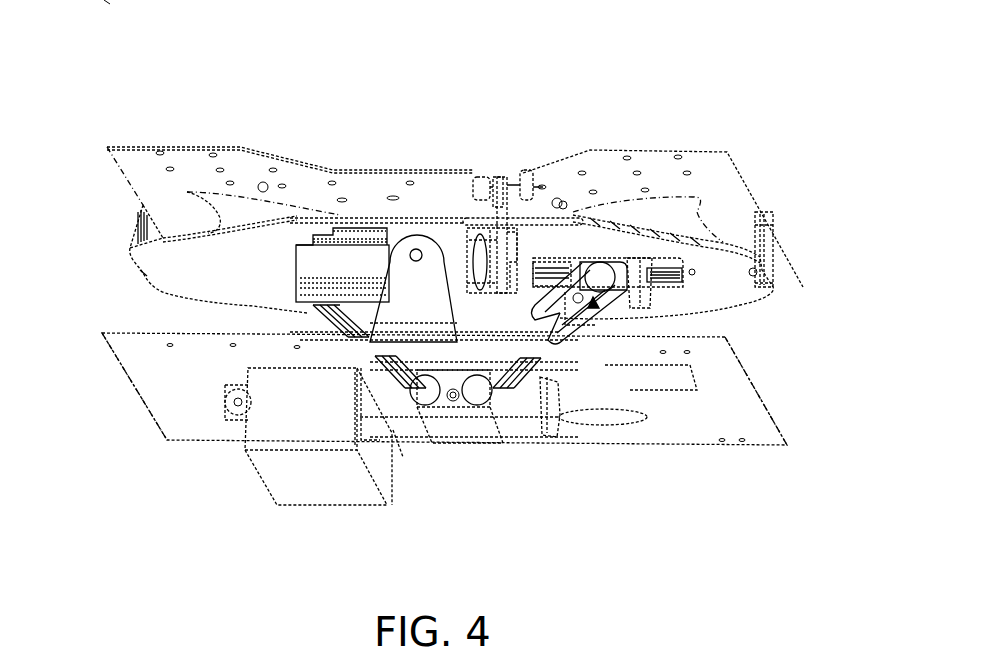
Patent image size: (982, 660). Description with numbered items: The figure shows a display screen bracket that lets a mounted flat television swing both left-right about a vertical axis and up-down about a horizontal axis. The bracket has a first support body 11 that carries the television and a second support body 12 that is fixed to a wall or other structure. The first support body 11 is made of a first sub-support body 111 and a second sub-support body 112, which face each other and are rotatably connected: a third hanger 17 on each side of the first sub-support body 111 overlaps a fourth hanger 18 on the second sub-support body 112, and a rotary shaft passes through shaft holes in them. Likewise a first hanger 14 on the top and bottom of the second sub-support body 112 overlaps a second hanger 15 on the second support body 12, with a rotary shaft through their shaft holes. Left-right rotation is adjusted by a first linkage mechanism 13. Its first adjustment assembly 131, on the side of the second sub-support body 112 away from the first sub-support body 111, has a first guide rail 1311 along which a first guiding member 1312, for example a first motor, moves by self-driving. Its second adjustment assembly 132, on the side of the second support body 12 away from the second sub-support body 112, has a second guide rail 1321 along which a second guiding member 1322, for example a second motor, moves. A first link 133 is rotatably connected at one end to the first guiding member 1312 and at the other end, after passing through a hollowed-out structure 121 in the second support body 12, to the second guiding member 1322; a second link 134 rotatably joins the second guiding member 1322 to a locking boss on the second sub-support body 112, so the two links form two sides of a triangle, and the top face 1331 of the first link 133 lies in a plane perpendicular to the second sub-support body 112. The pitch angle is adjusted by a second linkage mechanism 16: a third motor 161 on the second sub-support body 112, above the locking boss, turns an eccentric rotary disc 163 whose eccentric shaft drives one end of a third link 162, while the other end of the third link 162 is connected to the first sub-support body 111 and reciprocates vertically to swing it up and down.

The first support body 11 is at (407, 229).
The first sub-support body 111 is at (133, 178).
The second sub-support body 112 is at (156, 268).
The second support body 12 is at (450, 446).
The hollowed-out structure 121 is at (361, 358).
The first linkage mechanism 13 is at (626, 410).
The first adjustment assembly 131 is at (660, 388).
The first guide rail 1311 is at (677, 287).
The first guiding member 1312 is at (630, 305).
The second adjustment assembly 132 is at (489, 461).
The second guide rail 1321 is at (517, 423).
The second guiding member 1322 is at (447, 428).
The first link 133 is at (630, 404).
The top face 1331 is at (595, 323).
The second link 134 is at (400, 415).
The first hanger 14 is at (397, 227).
The second hanger 15 is at (427, 240).
The second linkage mechanism 16 is at (407, 171).
The third motor 161 is at (312, 257).
The third link 162 is at (477, 195).
The eccentric rotary disc 163 is at (480, 268).
The third hanger 17 is at (767, 222).
The fourth hanger 18 is at (765, 258).